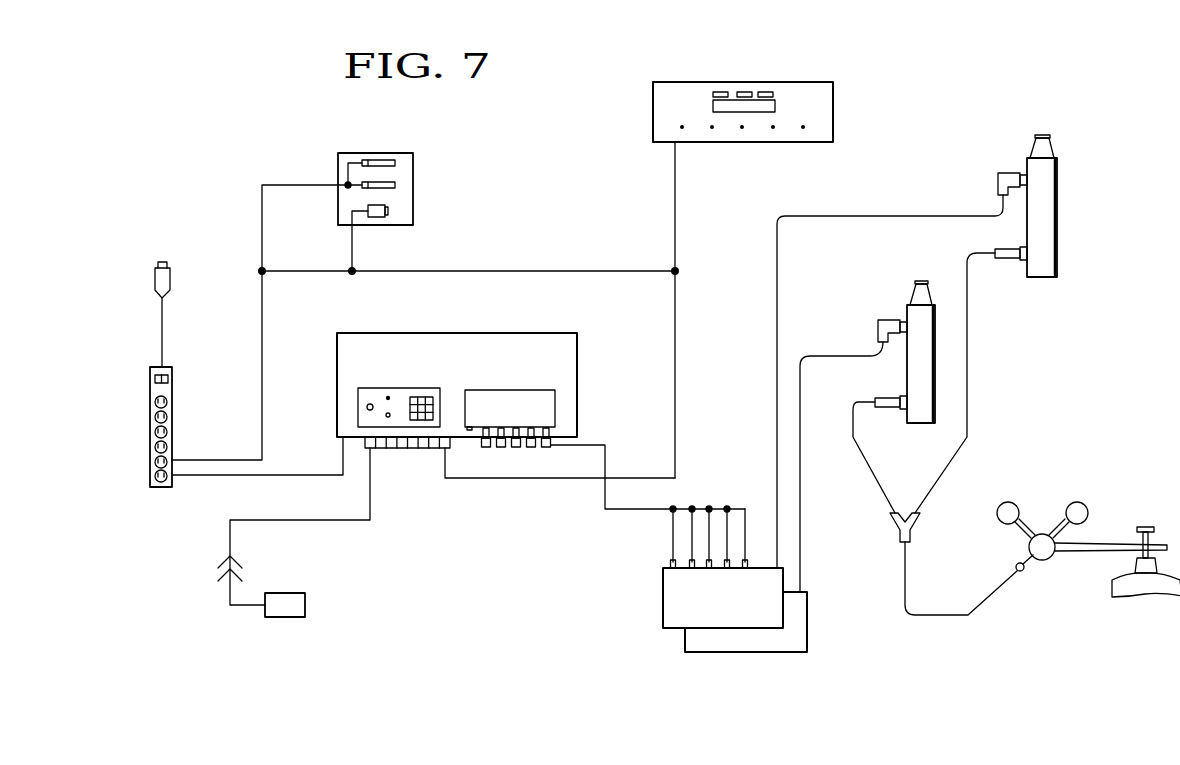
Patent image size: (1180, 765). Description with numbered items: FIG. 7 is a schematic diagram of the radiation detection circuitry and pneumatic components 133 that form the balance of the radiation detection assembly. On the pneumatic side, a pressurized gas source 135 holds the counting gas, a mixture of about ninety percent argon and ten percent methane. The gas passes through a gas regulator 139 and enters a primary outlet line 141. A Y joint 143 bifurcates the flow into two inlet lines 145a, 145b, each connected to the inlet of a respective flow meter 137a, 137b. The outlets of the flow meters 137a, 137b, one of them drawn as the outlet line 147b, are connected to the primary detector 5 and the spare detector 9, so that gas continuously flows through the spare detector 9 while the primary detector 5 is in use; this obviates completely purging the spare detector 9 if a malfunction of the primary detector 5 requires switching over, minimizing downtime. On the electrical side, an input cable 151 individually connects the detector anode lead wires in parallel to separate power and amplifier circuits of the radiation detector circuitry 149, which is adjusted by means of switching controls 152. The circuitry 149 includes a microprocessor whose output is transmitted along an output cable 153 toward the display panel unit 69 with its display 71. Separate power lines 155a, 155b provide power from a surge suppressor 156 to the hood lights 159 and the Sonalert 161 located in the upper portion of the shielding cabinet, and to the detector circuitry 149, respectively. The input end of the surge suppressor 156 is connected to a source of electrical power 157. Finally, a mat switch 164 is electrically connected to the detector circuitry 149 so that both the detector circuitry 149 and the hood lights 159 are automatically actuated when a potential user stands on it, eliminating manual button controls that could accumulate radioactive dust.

The radiation detection circuitry and pneumatic components 133 is at (203, 156).
The controller unit 69 is at (653, 108).
The display 71 is at (774, 104).
The hood lights 159 is at (395, 163).
The Sonalert 161 is at (378, 217).
The source of electrical power 157 is at (156, 282).
The surge suppressor 156 is at (150, 380).
The power line 155a is at (242, 460).
The power line 155b is at (246, 478).
The radiation detector circuitry 149 is at (470, 376).
The switching controls 152 is at (358, 390).
The input cable 151 is at (605, 465).
The output cable 153 is at (546, 478).
The mat switch 164 is at (305, 604).
The spare detector 9 is at (673, 595).
The primary detector 5 is at (690, 640).
The gas line 147b is at (890, 215).
The flow meter 137a is at (907, 305).
The flow meter 137b is at (1060, 218).
The inlet line 145a is at (876, 486).
The inlet line 145b is at (967, 358).
The Y joint 143 is at (918, 524).
The gas regulator 139 is at (1045, 533).
The primary outlet line 141 is at (931, 616).
The pressurized gas source 135 is at (1130, 592).